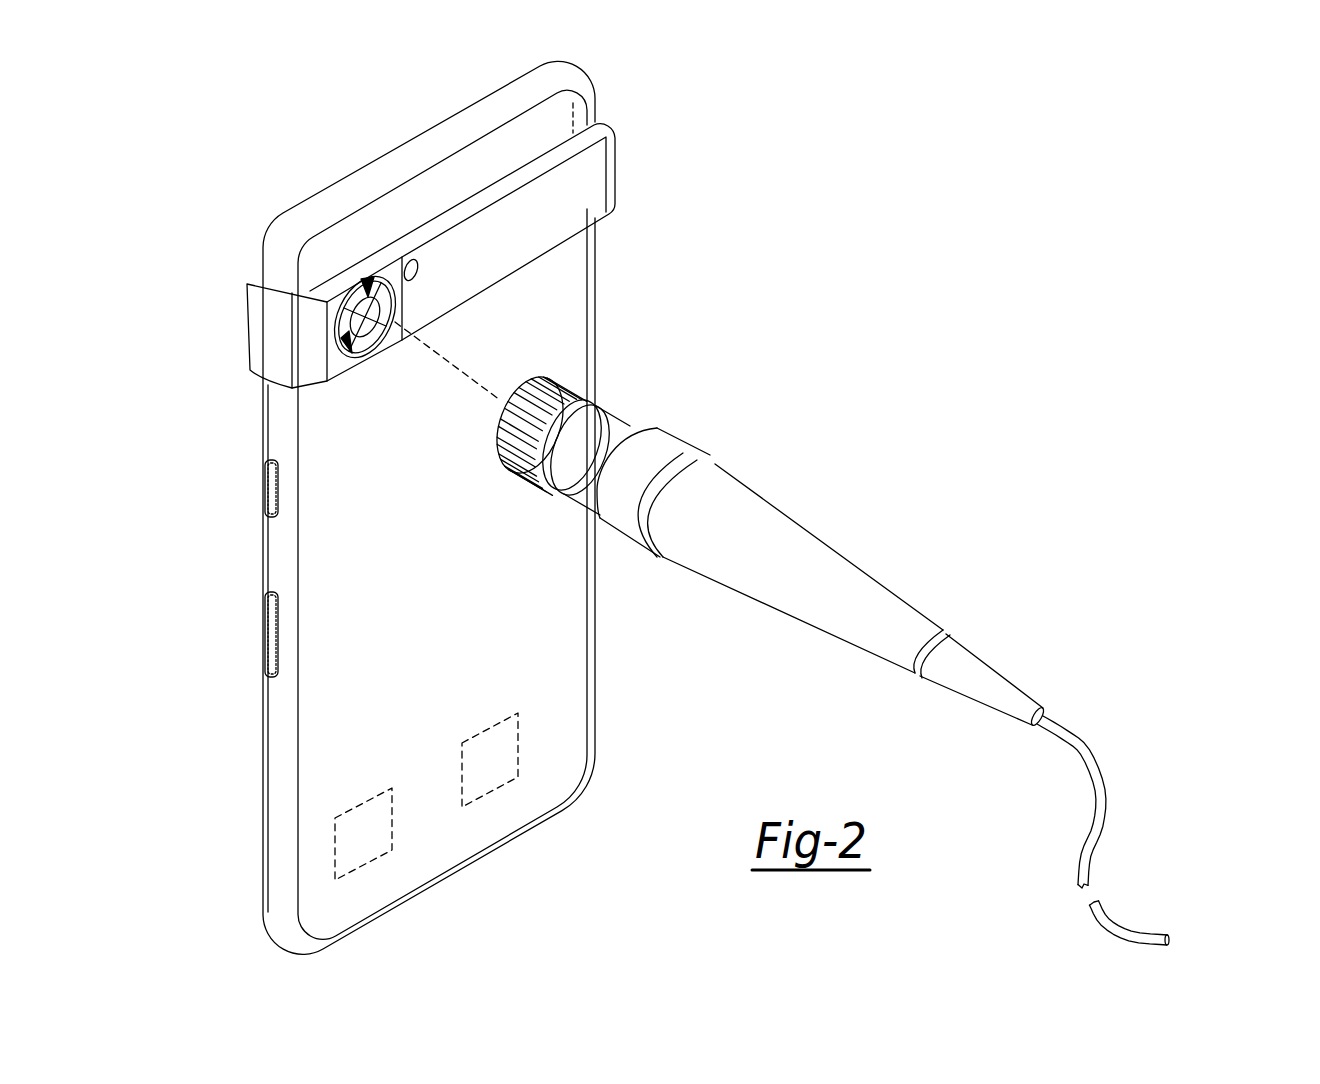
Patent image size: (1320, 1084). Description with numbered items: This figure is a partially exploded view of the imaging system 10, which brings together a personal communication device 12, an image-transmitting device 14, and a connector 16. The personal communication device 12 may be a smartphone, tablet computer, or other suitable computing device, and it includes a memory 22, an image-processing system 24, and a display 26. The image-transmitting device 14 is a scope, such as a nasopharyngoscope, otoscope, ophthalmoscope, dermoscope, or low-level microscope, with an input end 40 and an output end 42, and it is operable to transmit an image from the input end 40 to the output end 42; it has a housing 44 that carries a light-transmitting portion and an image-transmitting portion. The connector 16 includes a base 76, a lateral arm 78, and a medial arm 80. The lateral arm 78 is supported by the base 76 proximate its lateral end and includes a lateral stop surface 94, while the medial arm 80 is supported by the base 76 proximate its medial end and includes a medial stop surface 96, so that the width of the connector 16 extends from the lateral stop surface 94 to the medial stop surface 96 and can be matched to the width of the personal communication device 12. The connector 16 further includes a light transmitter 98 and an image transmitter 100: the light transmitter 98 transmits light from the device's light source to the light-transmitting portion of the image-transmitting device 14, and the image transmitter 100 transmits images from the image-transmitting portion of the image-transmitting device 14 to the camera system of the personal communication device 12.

The imaging system 10 is at (880, 184).
The personal communication device 12 is at (275, 720).
The image-transmitting device 14 is at (757, 547).
The connector 16 is at (586, 190).
The memory 22 is at (505, 722).
The image-processing system 24 is at (372, 788).
The display 26 is at (272, 556).
The input end 40 is at (502, 432).
The output end 42 is at (1172, 940).
The housing 44 is at (735, 595).
The base 76 is at (516, 235).
The lateral arm 78 is at (262, 340).
The medial arm 80 is at (592, 100).
The lateral stop surface 94 is at (276, 280).
The medial stop surface 96 is at (600, 120).
The light transmitter 98 is at (365, 285).
The image transmitter 100 is at (325, 388).